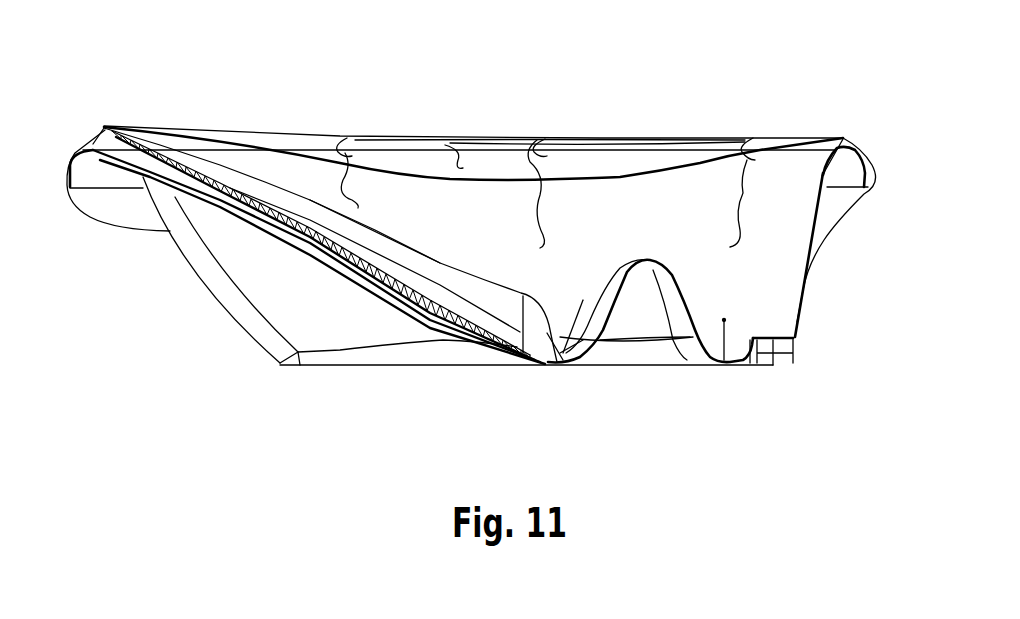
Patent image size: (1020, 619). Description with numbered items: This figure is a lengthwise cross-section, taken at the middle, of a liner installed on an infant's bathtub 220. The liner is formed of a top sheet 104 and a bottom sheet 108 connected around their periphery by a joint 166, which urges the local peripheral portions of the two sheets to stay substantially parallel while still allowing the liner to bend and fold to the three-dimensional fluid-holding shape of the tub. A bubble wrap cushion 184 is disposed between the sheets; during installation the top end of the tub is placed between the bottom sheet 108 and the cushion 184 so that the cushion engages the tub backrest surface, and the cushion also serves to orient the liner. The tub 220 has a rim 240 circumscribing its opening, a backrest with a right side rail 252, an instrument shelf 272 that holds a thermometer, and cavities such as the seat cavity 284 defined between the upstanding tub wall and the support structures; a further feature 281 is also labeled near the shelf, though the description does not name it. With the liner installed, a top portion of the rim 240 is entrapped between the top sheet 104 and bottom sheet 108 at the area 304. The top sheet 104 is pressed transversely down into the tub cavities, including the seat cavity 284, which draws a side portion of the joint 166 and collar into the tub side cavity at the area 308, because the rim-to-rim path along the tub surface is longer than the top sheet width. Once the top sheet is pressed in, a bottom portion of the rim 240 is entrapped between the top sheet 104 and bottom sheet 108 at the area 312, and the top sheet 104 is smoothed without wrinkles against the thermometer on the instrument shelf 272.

The top sheet 104 is at (452, 220).
The bottom sheet 108 is at (838, 198).
The joint 166 is at (105, 125).
The bubble wrap cushion 184 is at (228, 172).
The bathtub 220 is at (632, 391).
The rim 240 is at (93, 167).
The right side rail 252 is at (457, 283).
The instrument shelf 272 is at (764, 333).
The pin 281 is at (727, 364).
The seat cavity 284 is at (557, 332).
The area where top portion of rim is entrapped 304 is at (78, 224).
The area where joint and collar are drawn into tub side cavity 308 is at (583, 170).
The area where bottom portion of rim is entrapped 312 is at (877, 200).